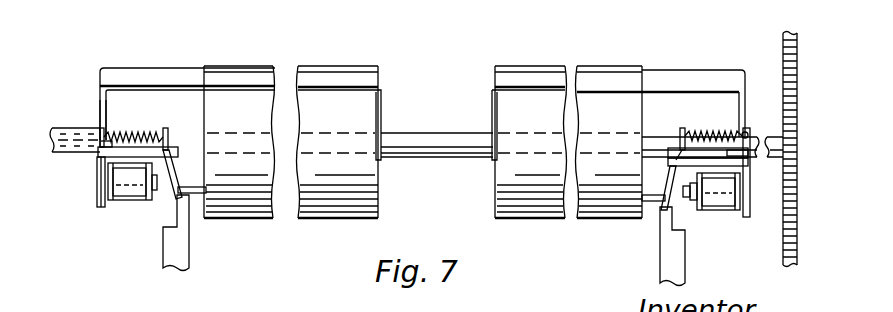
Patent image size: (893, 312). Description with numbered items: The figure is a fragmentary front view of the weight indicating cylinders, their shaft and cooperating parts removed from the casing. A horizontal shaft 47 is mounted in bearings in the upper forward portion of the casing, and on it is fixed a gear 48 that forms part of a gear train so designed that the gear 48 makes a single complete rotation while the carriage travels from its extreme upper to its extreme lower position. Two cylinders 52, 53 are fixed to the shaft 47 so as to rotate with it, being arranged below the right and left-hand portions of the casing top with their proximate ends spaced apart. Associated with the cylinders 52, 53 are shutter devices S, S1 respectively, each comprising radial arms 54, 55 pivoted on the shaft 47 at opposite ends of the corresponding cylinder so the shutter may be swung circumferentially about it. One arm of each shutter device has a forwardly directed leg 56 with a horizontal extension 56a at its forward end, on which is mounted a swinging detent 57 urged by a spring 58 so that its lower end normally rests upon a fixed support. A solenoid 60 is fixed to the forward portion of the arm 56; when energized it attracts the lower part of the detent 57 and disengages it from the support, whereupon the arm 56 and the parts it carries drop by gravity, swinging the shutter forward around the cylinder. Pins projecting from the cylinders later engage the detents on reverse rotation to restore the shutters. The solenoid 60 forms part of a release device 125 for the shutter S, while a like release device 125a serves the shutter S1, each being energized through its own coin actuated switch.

The shutter device S is at (167, 68).
The shutter device S1 is at (687, 72).
The horizontal shaft 47 is at (409, 134).
The gear 48 is at (798, 44).
The cylinder 52 is at (306, 224).
The cylinder 53 is at (552, 222).
The radial arm 54 is at (100, 107).
The radial arm 55 is at (382, 104).
The forwardly directed leg 56 is at (97, 191).
The horizontal extension 56a is at (128, 149).
The swinging detent 57 is at (178, 160).
The spring 58 is at (133, 122).
The solenoid 60 is at (125, 202).
The release device 125 is at (95, 238).
The release device 125a is at (713, 220).